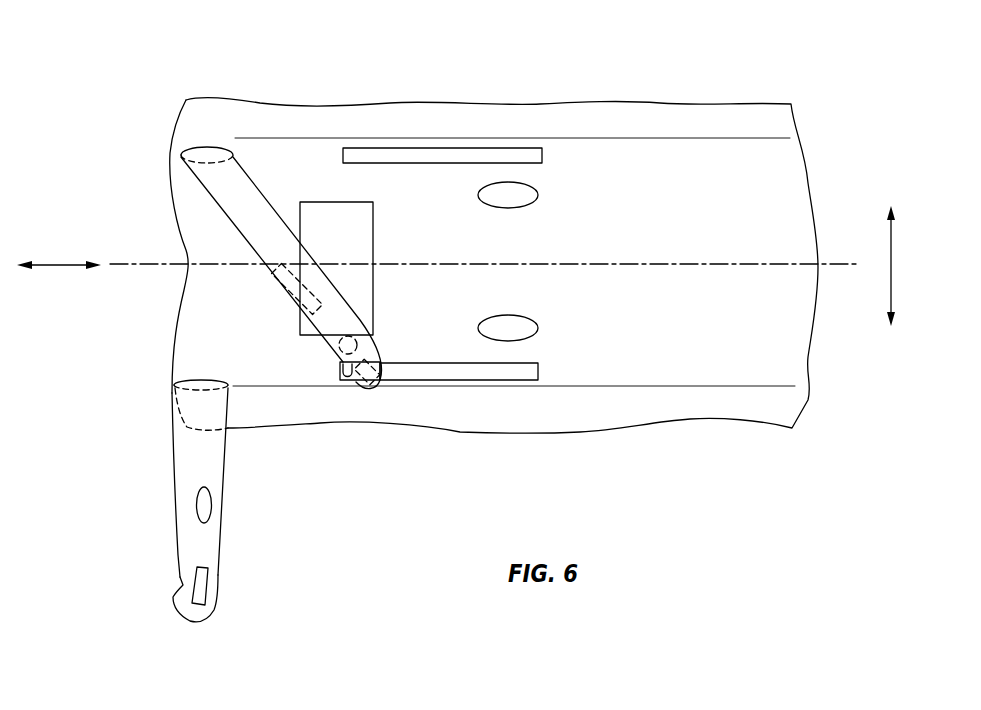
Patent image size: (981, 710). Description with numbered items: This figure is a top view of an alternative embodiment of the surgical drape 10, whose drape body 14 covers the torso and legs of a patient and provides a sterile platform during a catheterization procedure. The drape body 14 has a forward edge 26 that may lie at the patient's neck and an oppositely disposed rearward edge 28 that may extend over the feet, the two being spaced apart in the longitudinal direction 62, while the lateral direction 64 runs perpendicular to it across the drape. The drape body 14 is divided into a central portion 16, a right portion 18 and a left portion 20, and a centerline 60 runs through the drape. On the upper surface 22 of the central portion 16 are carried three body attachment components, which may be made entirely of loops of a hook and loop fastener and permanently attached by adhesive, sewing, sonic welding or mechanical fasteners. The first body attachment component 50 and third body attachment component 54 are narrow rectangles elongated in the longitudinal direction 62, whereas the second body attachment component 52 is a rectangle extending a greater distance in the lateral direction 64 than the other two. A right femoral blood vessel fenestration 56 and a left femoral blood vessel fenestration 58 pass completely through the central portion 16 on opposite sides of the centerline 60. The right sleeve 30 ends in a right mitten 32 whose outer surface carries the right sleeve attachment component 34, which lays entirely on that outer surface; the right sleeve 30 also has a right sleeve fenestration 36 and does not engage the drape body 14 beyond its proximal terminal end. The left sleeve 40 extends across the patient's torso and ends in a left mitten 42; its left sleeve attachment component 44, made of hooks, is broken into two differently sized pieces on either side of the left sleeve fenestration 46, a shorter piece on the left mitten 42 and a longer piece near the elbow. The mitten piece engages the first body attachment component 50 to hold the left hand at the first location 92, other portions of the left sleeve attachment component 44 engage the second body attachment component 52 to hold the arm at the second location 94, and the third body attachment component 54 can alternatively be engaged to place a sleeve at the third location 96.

The surgical drape 10 is at (796, 78).
The drape body 14 is at (735, 302).
The central portion 16 is at (735, 374).
The right portion 18 is at (760, 419).
The left portion 20 is at (748, 134).
The upper surface 22 is at (789, 208).
The forward edge 26 is at (185, 282).
The rearward edge 28 is at (817, 290).
The right sleeve 30 is at (182, 465).
The right mitten 32 is at (215, 597).
The right sleeve attachment component 34 is at (190, 593).
The right sleeve fenestration 36 is at (210, 507).
The left sleeve 40 is at (226, 222).
The left mitten 42 is at (380, 363).
The left sleeve attachment component 44 is at (293, 293).
The left sleeve fenestration 46 is at (348, 353).
The first body attachment component 50 is at (498, 378).
The second body attachment component 52 is at (331, 251).
The third body attachment component 54 is at (472, 158).
The right femoral blood vessel fenestration 56 is at (515, 322).
The left femoral blood vessel fenestration 58 is at (523, 198).
The centerline 60 is at (147, 263).
The longitudinal direction 62 is at (72, 268).
The lateral direction 64 is at (893, 263).
The first location 92 is at (385, 378).
The second location 94 is at (337, 294).
The third location 96 is at (488, 150).